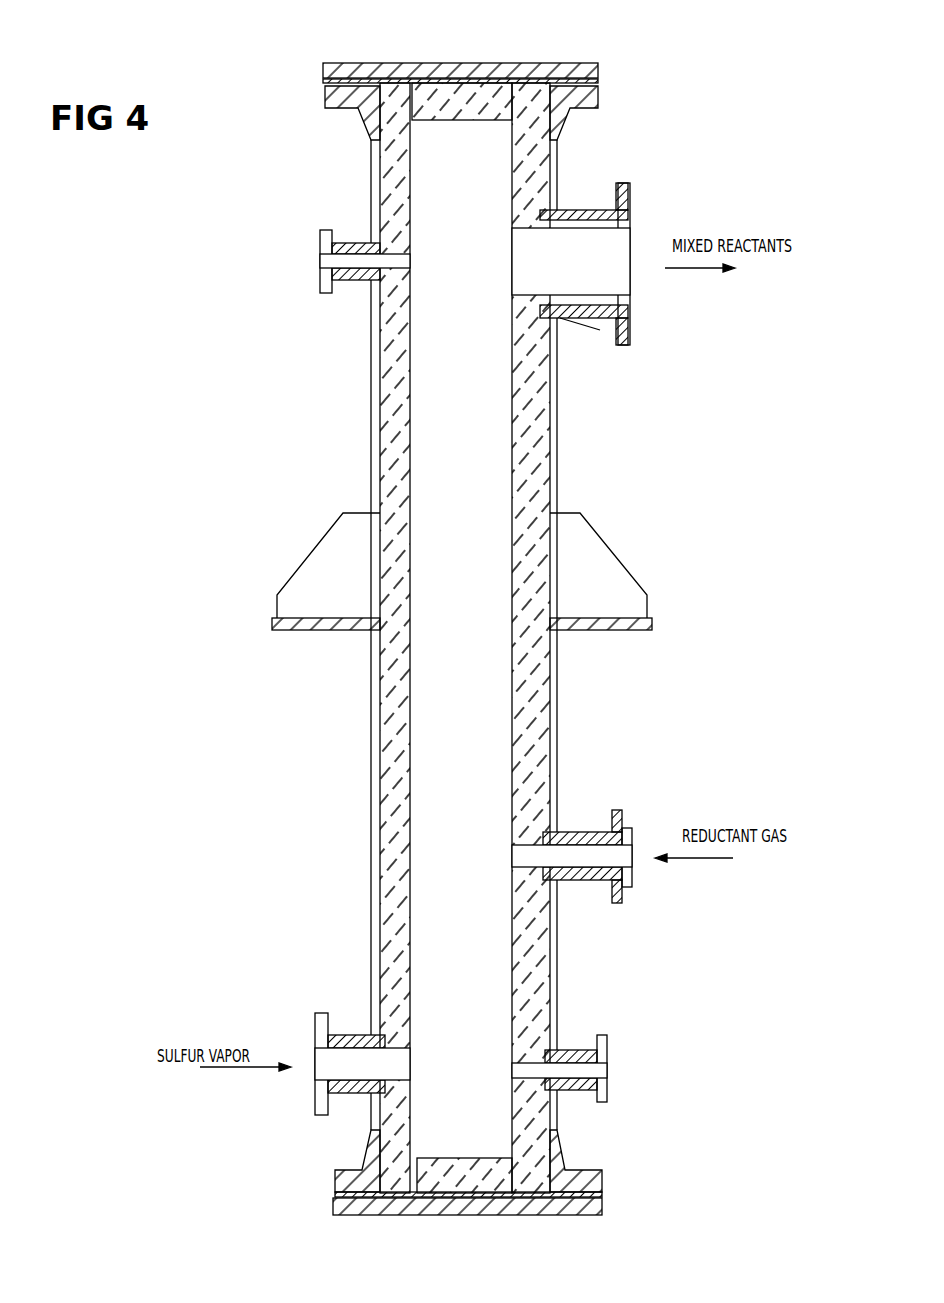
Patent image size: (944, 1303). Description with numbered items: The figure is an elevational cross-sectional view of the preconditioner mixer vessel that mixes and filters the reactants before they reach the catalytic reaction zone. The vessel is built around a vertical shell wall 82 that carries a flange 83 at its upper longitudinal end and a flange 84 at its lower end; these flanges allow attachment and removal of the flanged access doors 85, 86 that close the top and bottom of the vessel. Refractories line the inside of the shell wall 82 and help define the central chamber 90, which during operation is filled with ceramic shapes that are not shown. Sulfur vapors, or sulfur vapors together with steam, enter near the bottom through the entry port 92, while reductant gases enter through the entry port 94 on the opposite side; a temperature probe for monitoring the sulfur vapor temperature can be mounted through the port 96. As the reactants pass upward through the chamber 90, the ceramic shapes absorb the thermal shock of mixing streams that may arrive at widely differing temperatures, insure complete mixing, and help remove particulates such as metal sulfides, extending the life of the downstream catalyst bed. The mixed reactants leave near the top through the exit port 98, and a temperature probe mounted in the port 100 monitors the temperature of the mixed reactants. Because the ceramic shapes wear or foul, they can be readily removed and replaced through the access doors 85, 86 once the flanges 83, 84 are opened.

The shell wall 82 is at (371, 646).
The flange 83 is at (335, 96).
The flange 84 is at (592, 1182).
The flanged access door 85 is at (470, 64).
The flanged access door 86 is at (556, 1212).
The chamber 90 is at (469, 492).
The entry port 92 is at (340, 1068).
The entry port 94 is at (590, 832).
The port 96 is at (578, 1076).
The exit port 98 is at (585, 322).
The port 100 is at (348, 284).